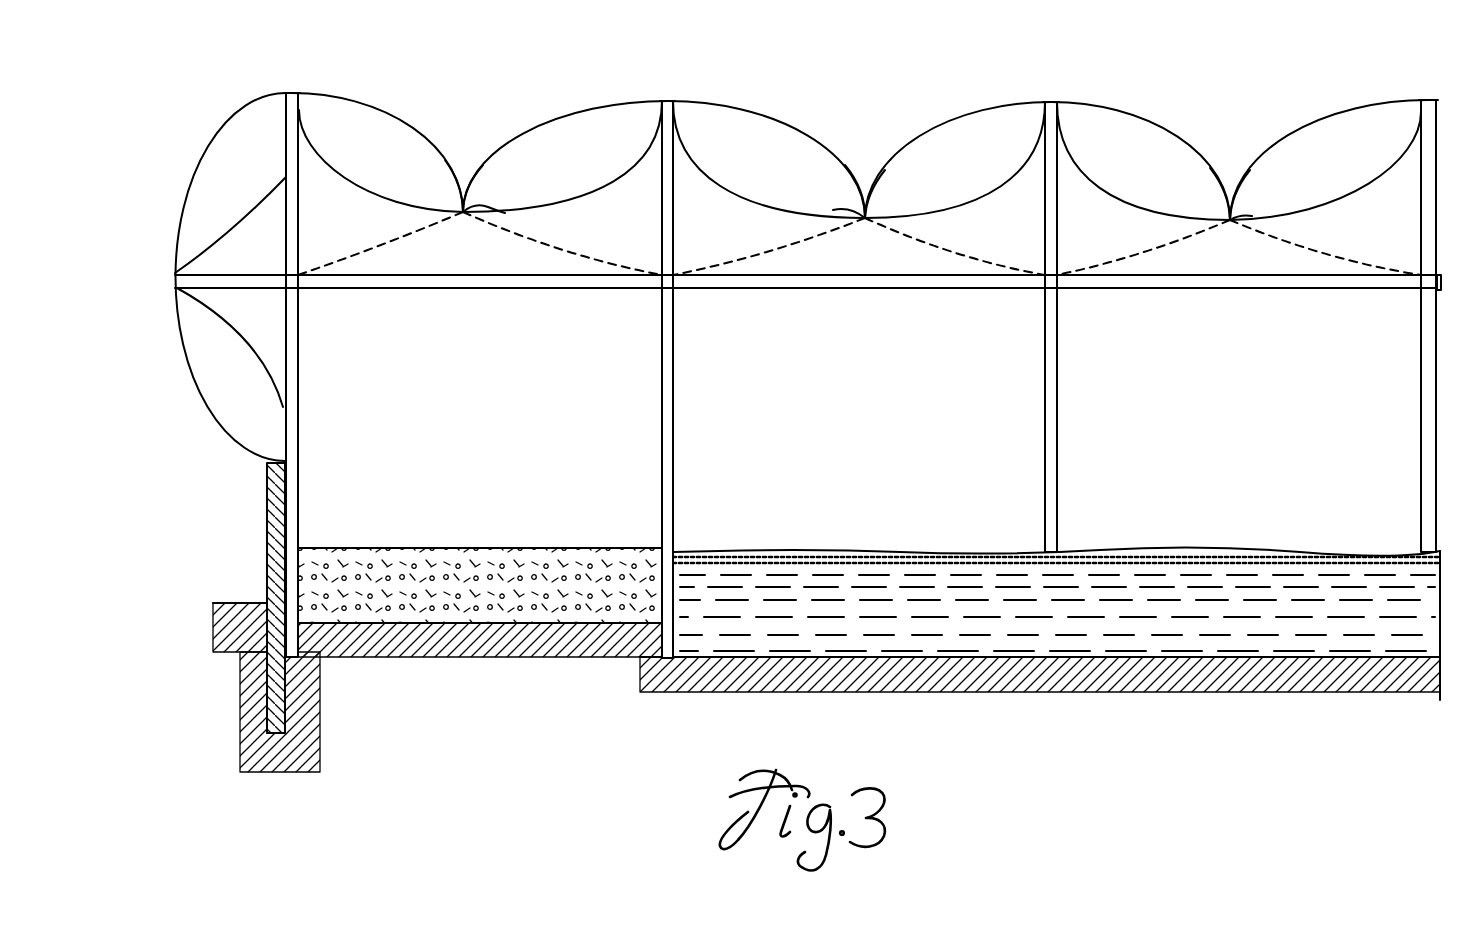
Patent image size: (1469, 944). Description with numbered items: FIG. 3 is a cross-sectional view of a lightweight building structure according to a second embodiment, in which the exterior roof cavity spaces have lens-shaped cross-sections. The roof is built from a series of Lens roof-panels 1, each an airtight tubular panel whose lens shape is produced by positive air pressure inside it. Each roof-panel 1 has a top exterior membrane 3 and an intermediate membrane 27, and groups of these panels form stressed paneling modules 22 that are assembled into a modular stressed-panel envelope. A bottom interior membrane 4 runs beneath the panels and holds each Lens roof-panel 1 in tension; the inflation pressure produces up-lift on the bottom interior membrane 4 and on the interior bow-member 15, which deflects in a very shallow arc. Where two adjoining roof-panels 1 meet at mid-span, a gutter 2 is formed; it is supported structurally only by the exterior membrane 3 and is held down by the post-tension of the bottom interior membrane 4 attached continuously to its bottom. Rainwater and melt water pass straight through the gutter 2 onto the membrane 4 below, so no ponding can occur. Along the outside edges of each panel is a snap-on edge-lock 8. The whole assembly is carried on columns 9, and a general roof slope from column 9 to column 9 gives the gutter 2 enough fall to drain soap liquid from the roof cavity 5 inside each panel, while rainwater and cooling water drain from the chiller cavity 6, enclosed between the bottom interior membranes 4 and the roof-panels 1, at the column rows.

The Lens roof-panel 1 is at (817, 178).
The gutter 2 is at (505, 213).
The top exterior membrane 3 is at (398, 113).
The bottom interior membrane 4 is at (410, 238).
The roof cavity 5 is at (817, 185).
The chiller cavity 6 is at (326, 240).
The snap-on edge-lock 8 is at (667, 100).
The column 9 is at (298, 445).
The interior bow-member 15 is at (313, 288).
The stressed paneling module 22 is at (467, 148).
The intermediate membrane 27 is at (333, 173).